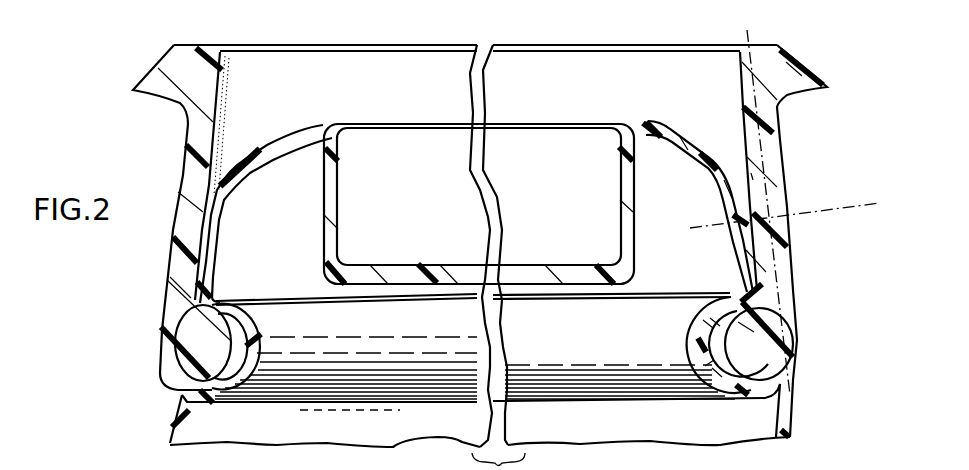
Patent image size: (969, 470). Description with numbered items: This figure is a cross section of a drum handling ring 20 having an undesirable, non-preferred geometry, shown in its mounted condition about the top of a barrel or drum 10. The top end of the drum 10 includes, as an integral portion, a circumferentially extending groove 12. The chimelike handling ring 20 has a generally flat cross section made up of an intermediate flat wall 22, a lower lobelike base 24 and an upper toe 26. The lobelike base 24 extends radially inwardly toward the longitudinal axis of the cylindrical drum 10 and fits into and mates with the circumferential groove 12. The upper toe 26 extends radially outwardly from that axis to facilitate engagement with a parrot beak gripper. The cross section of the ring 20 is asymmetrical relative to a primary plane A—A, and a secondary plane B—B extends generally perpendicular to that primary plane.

The drum 10 is at (705, 131).
The circumferentially extending groove 12 is at (710, 346).
The drum handling ring 20 is at (808, 273).
The intermediate flat wall 22 is at (777, 169).
The lobelike base 24 is at (760, 350).
The upper toe 26 is at (778, 75).